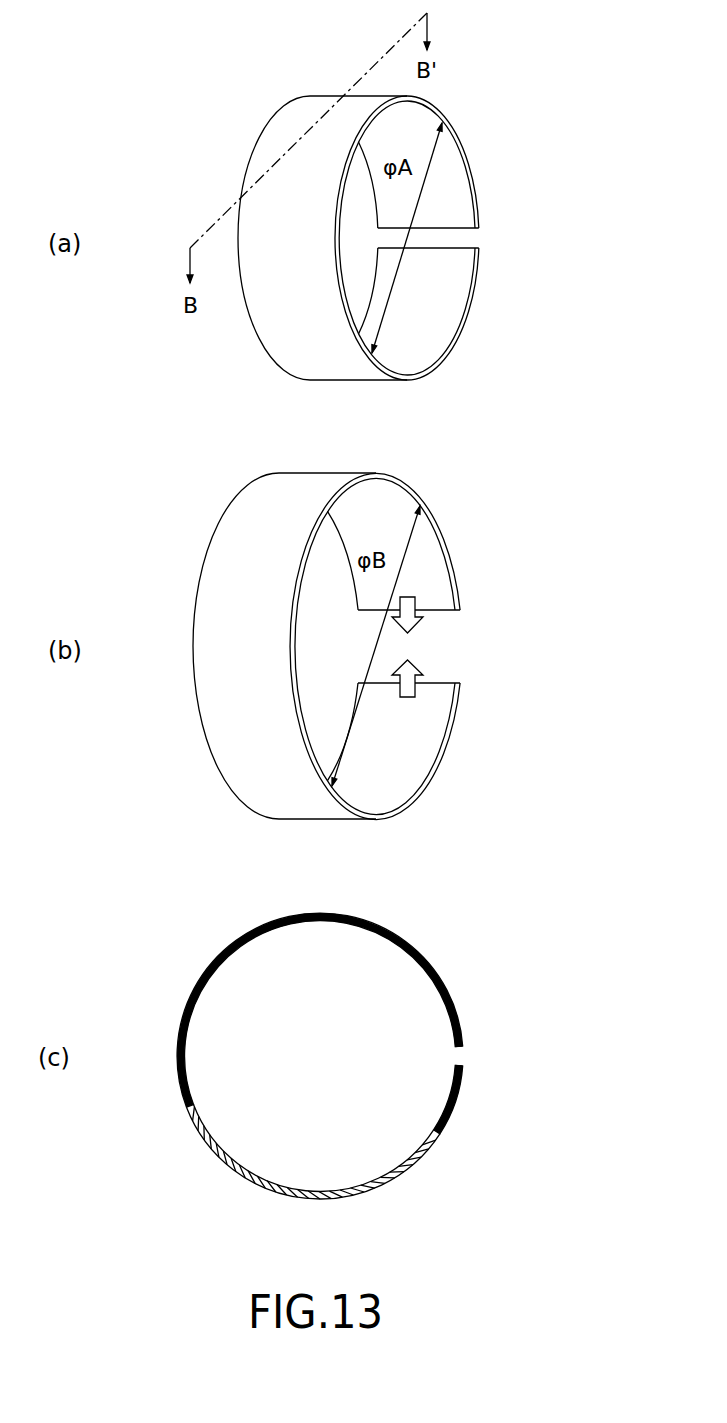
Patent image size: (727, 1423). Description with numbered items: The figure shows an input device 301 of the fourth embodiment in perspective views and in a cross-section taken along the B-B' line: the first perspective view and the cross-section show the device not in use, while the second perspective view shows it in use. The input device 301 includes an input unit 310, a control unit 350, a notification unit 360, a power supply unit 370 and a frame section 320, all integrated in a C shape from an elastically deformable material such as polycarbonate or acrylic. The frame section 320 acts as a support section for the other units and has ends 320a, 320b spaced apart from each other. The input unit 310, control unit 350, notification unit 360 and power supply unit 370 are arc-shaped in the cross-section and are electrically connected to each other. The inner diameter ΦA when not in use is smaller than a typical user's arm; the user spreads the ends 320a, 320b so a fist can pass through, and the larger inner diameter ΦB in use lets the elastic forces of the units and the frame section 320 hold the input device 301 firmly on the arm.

The input device 301 is at (480, 137).
The input unit 310 is at (232, 947).
The frame section 320 is at (309, 913).
The end of frame section 320a is at (463, 228).
The end of frame section 320b is at (463, 248).
The control unit 350 is at (267, 1188).
The notification unit 360 is at (341, 1198).
The power supply unit 370 is at (422, 1163).